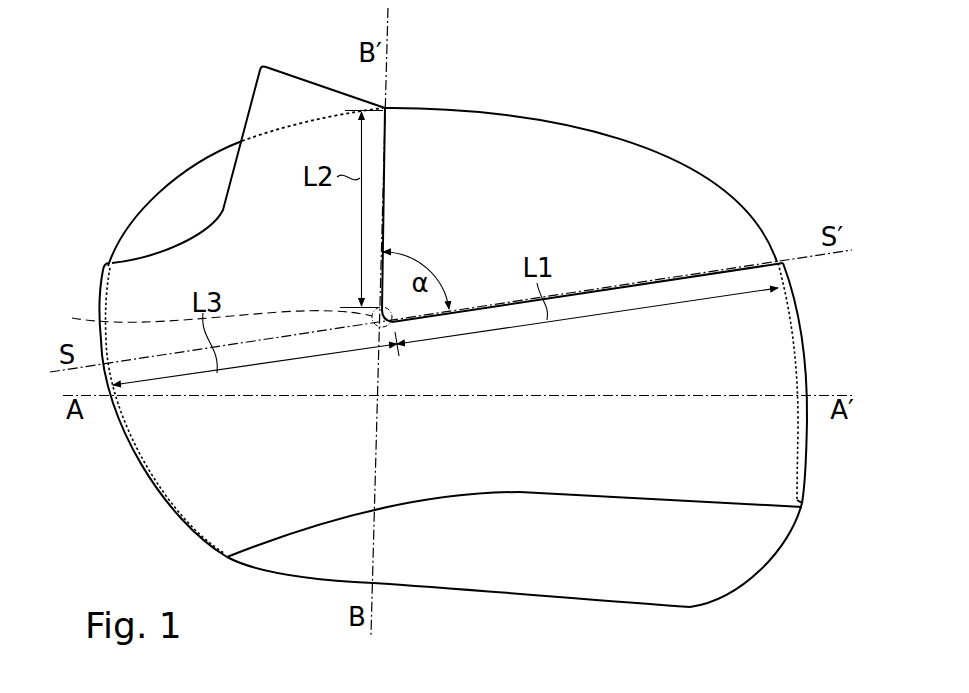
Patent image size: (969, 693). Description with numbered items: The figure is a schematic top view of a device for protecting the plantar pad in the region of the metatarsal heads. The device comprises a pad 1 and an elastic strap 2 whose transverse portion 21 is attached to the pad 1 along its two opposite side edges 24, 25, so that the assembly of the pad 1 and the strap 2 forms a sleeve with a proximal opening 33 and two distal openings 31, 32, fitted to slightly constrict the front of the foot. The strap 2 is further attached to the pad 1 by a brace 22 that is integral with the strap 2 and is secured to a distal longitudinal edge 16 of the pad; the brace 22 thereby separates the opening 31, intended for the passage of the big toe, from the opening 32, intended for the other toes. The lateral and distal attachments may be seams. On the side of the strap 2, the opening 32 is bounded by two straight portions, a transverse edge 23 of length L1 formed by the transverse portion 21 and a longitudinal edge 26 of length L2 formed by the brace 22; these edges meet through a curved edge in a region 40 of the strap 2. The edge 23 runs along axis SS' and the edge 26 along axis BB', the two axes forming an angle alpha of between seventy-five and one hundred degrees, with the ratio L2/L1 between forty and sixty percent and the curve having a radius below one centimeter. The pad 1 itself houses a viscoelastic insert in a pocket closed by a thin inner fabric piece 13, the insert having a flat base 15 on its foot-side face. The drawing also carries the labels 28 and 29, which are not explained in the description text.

The pad 1 is at (428, 577).
The elastic strap 2 is at (805, 505).
The inner fabric piece 13 is at (748, 555).
The flat base 15 is at (533, 600).
The distal longitudinal edge 16 is at (485, 105).
The transverse portion 21 is at (662, 483).
The brace 22 is at (282, 155).
The transverse edge 23 is at (680, 273).
The side edge 24 is at (140, 477).
The side edge 25 is at (800, 318).
The longitudinal edge 26 is at (388, 178).
The hosel 28 is at (290, 127).
The sole upper surface 29 is at (580, 497).
The opening 31 is at (177, 212).
The opening 32 is at (589, 270).
The opening 33 is at (488, 520).
The region 40 is at (216, 318).